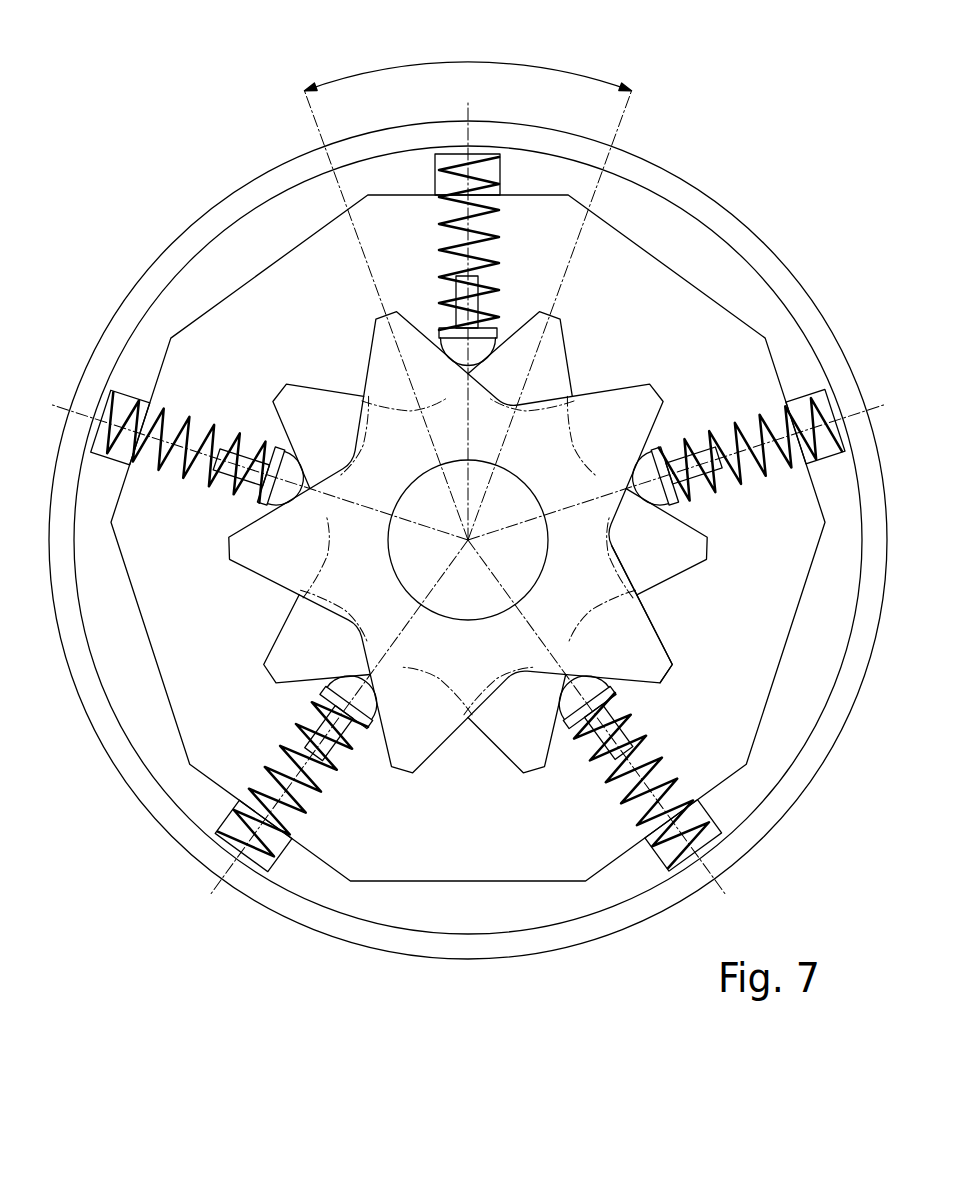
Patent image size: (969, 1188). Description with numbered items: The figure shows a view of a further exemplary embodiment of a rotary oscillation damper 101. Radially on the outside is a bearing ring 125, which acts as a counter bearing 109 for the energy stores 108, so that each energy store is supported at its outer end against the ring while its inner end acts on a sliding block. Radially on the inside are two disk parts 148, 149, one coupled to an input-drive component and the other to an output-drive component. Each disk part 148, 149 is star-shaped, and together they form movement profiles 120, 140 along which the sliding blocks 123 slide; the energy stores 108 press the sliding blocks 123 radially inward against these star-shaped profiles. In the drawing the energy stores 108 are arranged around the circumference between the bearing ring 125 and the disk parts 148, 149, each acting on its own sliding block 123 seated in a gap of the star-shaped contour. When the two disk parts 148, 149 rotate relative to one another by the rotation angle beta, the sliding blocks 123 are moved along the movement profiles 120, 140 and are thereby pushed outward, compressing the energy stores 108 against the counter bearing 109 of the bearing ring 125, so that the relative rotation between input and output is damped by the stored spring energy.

The rotary oscillation damper 101 is at (468, 531).
The energy store 108 is at (327, 758).
The counter bearing 109 is at (253, 835).
The movement profile 120 is at (525, 539).
The sliding block 123 is at (282, 498).
The bearing ring 125 is at (413, 912).
The movement profile 140 is at (661, 641).
The disk part 148 is at (647, 401).
The disk part 149 is at (690, 552).